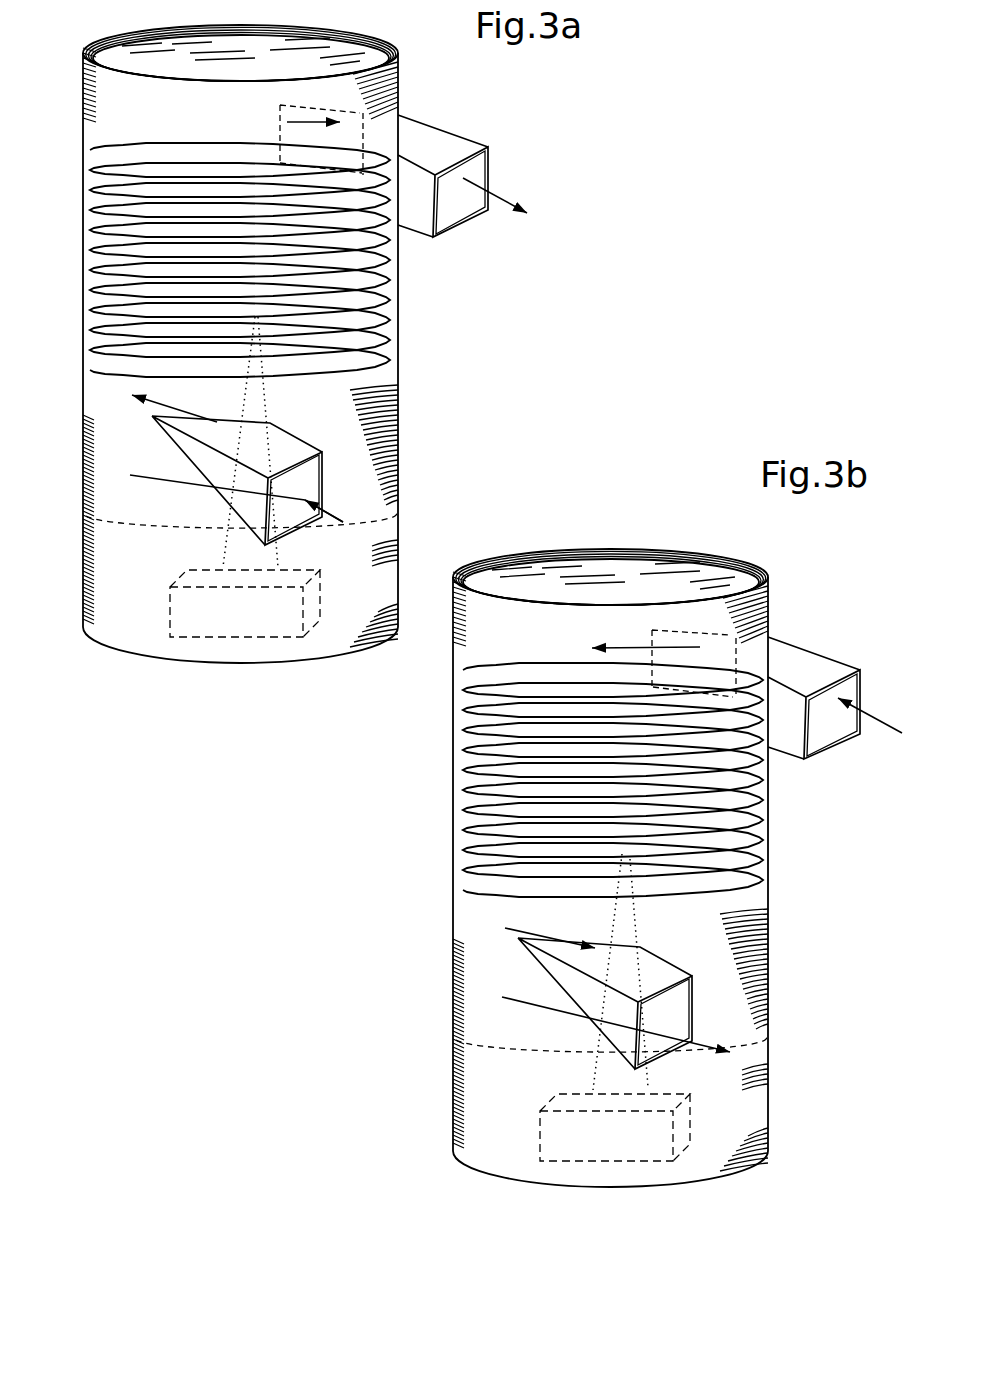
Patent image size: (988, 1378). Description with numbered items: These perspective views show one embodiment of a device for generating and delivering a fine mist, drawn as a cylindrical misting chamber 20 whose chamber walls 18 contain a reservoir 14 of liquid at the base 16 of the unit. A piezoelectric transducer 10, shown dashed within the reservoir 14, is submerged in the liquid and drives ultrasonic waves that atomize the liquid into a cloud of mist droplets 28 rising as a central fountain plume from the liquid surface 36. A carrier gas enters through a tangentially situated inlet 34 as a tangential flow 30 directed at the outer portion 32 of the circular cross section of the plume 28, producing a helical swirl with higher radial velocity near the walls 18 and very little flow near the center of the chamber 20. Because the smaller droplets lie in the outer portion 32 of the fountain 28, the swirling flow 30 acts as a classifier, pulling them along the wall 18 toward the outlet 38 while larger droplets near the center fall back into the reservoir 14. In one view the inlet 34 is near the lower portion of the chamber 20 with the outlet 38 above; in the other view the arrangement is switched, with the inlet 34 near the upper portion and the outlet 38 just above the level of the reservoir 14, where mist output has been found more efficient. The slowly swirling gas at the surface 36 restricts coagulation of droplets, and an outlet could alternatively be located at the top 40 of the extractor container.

In FIG. 3a, the piezoelectric transducer 10 is at (180, 613).
In FIG. 3b, the piezoelectric transducer 10 is at (600, 1153).
In FIG. 3a, the reservoir 14 is at (107, 607).
In FIG. 3b, the reservoir 14 is at (708, 1097).
In FIG. 3a, the base 16 is at (370, 508).
In FIG. 3b, the base 16 is at (735, 1028).
In FIG. 3a, the chamber walls 18 is at (83, 383).
In FIG. 3b, the chamber walls 18 is at (462, 917).
In FIG. 3a, the misting chamber 20 is at (418, 400).
In FIG. 3b, the misting chamber 20 is at (783, 858).
In FIG. 3a, the mist droplets 28 is at (242, 397).
In FIG. 3b, the mist droplets 28 is at (613, 923).
In FIG. 3a, the tangential flow 30 is at (390, 307).
In FIG. 3b, the outer portion 32 is at (555, 652).
In FIG. 3a, the inlet 34 is at (283, 441).
In FIG. 3b, the inlet 34 is at (805, 662).
In FIG. 3a, the surface 36 is at (147, 530).
In FIG. 3b, the surface 36 is at (522, 1052).
In FIG. 3a, the outlet 38 is at (430, 147).
In FIG. 3b, the outlet 38 is at (657, 980).
In FIG. 3b, the top 40 is at (603, 565).